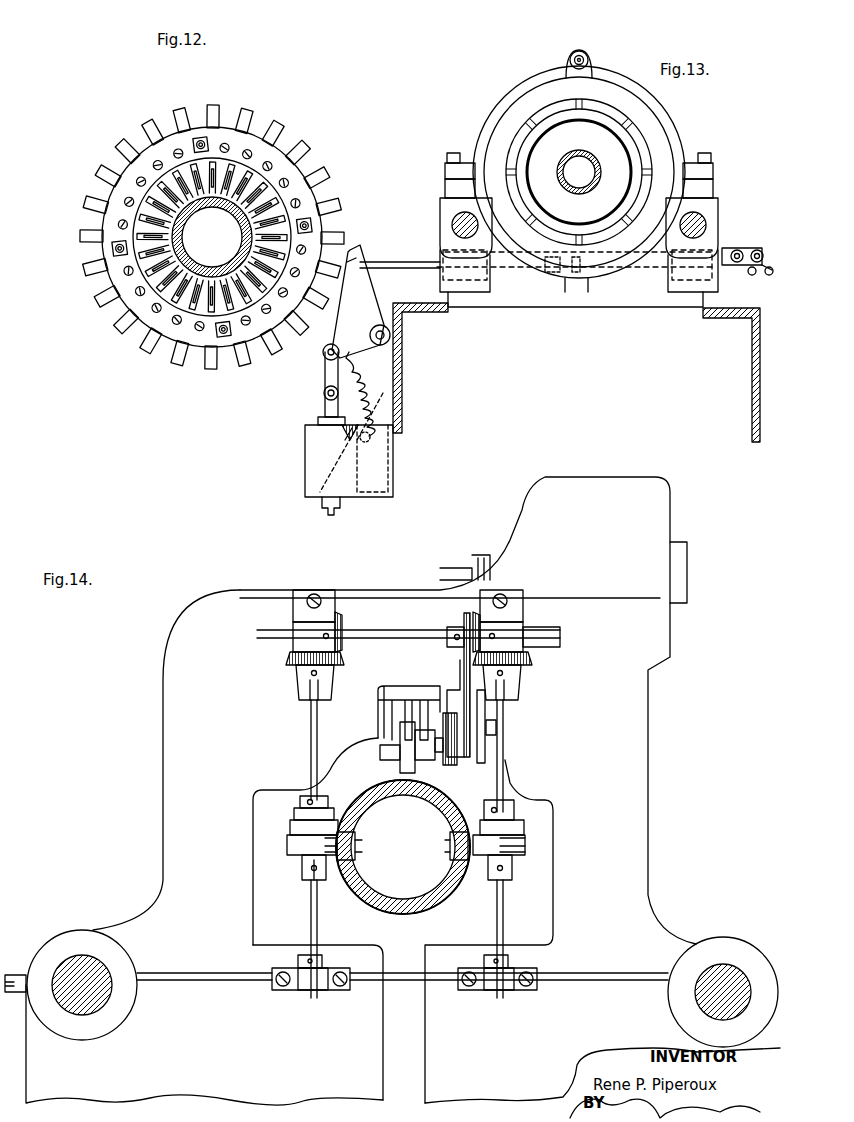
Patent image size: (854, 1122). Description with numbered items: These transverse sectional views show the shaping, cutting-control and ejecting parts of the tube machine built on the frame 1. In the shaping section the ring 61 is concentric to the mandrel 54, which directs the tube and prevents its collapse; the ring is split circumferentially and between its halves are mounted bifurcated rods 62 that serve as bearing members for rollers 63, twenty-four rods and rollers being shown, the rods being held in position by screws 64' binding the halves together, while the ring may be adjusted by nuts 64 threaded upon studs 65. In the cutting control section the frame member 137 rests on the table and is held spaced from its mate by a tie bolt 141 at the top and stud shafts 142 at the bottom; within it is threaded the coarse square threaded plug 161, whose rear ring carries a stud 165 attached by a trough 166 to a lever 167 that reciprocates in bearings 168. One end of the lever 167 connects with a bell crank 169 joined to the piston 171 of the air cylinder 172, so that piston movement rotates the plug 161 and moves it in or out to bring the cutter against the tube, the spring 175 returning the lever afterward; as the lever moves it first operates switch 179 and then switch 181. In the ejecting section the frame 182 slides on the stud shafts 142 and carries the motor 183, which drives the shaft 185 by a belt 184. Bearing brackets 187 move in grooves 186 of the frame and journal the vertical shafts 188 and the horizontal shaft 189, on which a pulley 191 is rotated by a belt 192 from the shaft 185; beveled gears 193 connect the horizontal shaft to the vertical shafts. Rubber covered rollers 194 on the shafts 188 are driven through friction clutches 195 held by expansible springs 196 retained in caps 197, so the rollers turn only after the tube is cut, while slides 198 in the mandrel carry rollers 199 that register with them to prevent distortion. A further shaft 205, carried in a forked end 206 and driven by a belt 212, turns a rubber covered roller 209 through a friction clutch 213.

In FIG. 13, the frame 1 is at (402, 370).
In FIG. 12, the mandrel 54 is at (210, 262).
In FIG. 13, the mandrel 54 is at (568, 176).
In FIG. 14, the mandrel 54 is at (403, 797).
In FIG. 12, the ring 61 is at (272, 160).
In FIG. 12, the bifurcated rods 62 is at (212, 370).
In FIG. 12, the rollers 63 is at (164, 259).
In FIG. 12, the nuts 64 is at (241, 203).
In FIG. 12, the screws 64' is at (314, 169).
In FIG. 12, the studs 65 is at (210, 130).
In FIG. 13, the frame member 137 is at (528, 84).
In FIG. 13, the tie bolt 141 is at (590, 56).
In FIG. 13, the stud shafts 142 is at (458, 215).
In FIG. 14, the stud shafts 142 is at (78, 956).
In FIG. 13, the plug 161 is at (512, 118).
In FIG. 13, the stud 165 is at (548, 272).
In FIG. 13, the trough 166 is at (563, 272).
In FIG. 13, the lever 167 is at (396, 262).
In FIG. 13, the bearings 168 is at (483, 282).
In FIG. 12, the bell crank 169 is at (352, 331).
In FIG. 12, the piston 171 is at (325, 406).
In FIG. 12, the air cylinder 172 is at (305, 456).
In FIG. 12, the spring 175 is at (362, 397).
In FIG. 13, the switch 179 is at (738, 248).
In FIG. 13, the switch 181 is at (762, 248).
In FIG. 14, the frame 182 is at (163, 750).
In FIG. 14, the motor 183 is at (505, 540).
In FIG. 14, the belt 184 is at (515, 693).
In FIG. 14, the shaft 185 is at (496, 728).
In FIG. 14, the grooves 186 is at (587, 599).
In FIG. 14, the bearing brackets 187 is at (300, 611).
In FIG. 14, the vertical shafts 188 is at (311, 719).
In FIG. 14, the horizontal shaft 189 is at (368, 639).
In FIG. 14, the pulley 191 is at (462, 621).
In FIG. 14, the belt 192 is at (462, 670).
In FIG. 14, the beveled gears 193 is at (342, 621).
In FIG. 14, the rubber covered rollers 194 is at (287, 846).
In FIG. 14, the friction clutches 195 is at (290, 826).
In FIG. 14, the expansible springs 196 is at (294, 815).
In FIG. 14, the caps 197 is at (300, 812).
In FIG. 14, the slides 198 is at (452, 828).
In FIG. 14, the rollers 199 is at (450, 856).
In FIG. 14, the shaft 205 is at (380, 740).
In FIG. 14, the forked end 206 is at (400, 742).
In FIG. 14, the rubber covered roller 209 is at (398, 766).
In FIG. 14, the belt 212 is at (504, 774).
In FIG. 14, the friction clutch 213 is at (436, 766).